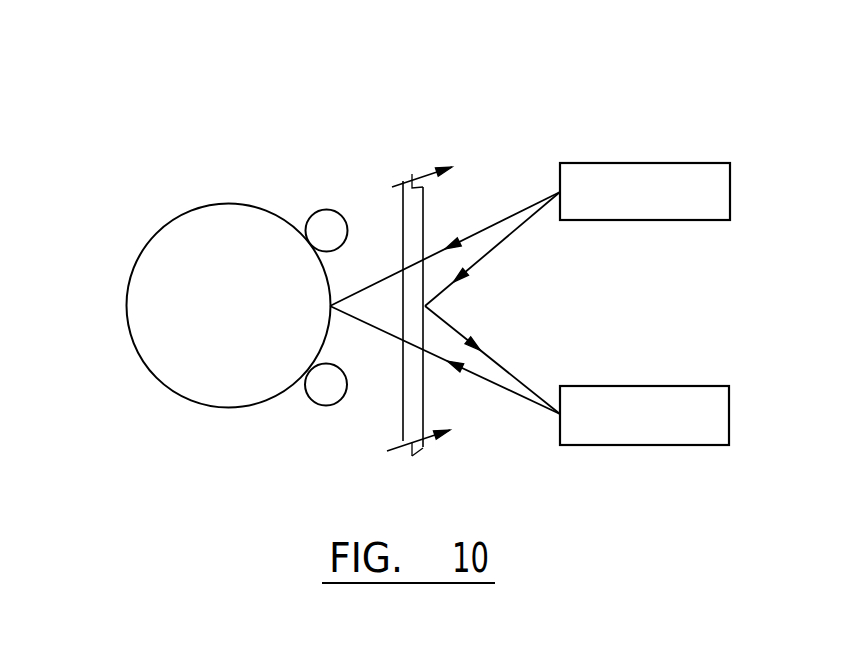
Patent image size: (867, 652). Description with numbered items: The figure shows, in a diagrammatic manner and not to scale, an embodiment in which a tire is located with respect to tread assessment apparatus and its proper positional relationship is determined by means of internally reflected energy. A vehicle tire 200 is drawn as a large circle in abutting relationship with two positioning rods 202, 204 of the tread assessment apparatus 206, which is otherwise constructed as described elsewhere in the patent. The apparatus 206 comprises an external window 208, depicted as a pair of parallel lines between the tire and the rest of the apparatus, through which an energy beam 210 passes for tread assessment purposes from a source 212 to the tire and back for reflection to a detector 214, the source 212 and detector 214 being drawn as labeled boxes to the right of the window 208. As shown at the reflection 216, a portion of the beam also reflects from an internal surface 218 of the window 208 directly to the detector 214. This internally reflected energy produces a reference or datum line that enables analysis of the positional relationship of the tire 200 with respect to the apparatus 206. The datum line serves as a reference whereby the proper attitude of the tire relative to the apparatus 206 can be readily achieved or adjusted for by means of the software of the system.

The vehicle tire 200 is at (145, 247).
The positioning rod 202 is at (320, 210).
The positioning rod 204 is at (315, 408).
The tread assessment apparatus 206 is at (485, 199).
The external window 208 is at (425, 217).
The energy beam 210 is at (478, 231).
The source 212 is at (700, 163).
The detector 214 is at (697, 445).
The reflection 216 is at (441, 310).
The internal surface 218 is at (427, 387).